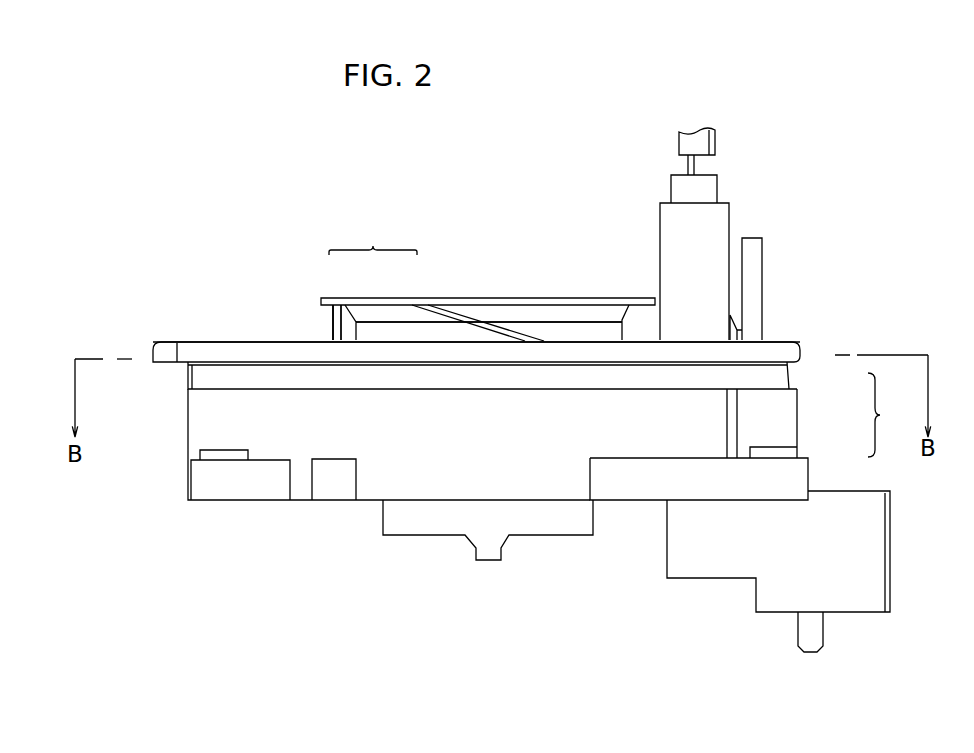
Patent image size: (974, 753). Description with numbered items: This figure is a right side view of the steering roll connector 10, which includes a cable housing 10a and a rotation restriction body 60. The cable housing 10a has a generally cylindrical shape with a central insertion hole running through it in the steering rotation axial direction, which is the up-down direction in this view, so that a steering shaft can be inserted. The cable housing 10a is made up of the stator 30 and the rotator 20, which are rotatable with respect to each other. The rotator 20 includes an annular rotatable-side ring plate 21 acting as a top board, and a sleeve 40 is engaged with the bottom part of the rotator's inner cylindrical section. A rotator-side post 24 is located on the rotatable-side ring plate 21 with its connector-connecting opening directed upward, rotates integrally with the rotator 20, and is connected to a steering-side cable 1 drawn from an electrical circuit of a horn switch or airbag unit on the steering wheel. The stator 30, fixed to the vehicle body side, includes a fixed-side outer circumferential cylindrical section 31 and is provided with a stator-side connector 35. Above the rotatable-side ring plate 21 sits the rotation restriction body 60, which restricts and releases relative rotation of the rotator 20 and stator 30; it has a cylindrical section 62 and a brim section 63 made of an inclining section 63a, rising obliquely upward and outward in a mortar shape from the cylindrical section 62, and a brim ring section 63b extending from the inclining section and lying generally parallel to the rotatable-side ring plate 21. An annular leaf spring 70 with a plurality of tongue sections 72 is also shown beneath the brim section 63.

The steering-side cable 1 is at (681, 143).
The steering roll connector 10 is at (837, 136).
The cable housing 10a is at (893, 415).
The rotator 20 is at (811, 364).
The rotatable-side ring plate 21 is at (770, 347).
The rotator-side post 24 is at (713, 222).
The stator 30 is at (808, 416).
The fixed-side outer circumferential cylindrical section 31 is at (198, 430).
The stator-side connector 35 is at (768, 595).
The sleeve 40 is at (435, 528).
The rotation restriction body 60 is at (549, 288).
The cylindrical section 62 is at (613, 332).
The brim section 63 is at (373, 236).
The inclining section 63a is at (392, 313).
The brim ring section 63b is at (351, 302).
The annular leaf spring 70 is at (322, 314).
The tongue sections 72 is at (333, 328).